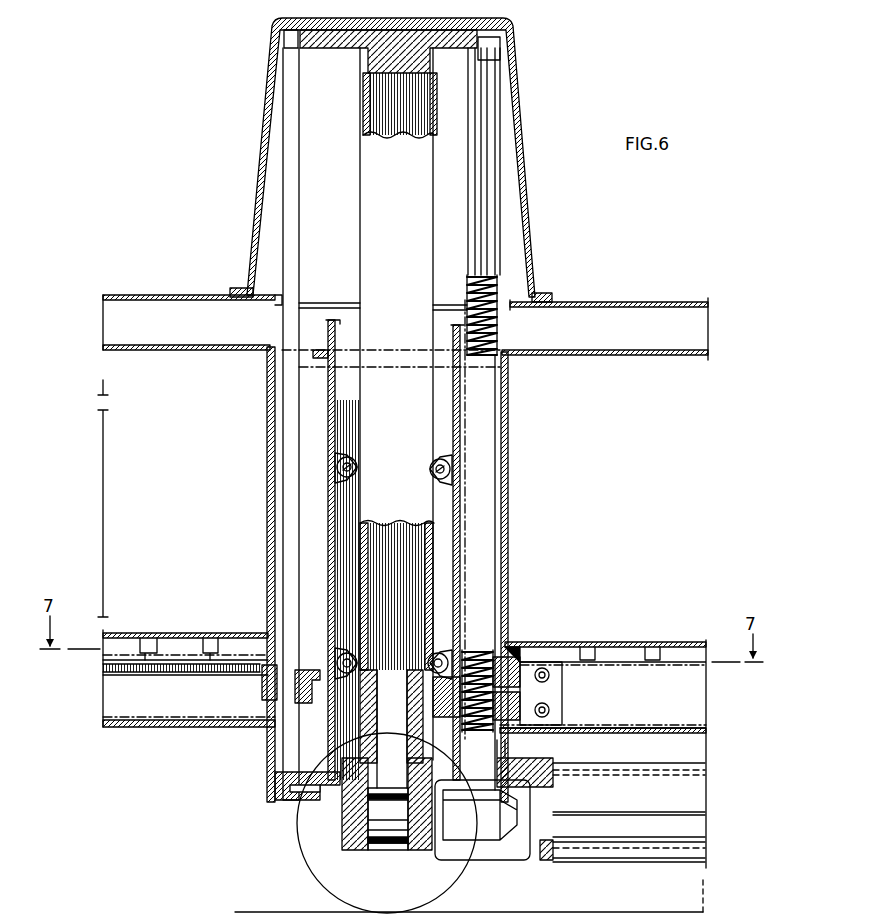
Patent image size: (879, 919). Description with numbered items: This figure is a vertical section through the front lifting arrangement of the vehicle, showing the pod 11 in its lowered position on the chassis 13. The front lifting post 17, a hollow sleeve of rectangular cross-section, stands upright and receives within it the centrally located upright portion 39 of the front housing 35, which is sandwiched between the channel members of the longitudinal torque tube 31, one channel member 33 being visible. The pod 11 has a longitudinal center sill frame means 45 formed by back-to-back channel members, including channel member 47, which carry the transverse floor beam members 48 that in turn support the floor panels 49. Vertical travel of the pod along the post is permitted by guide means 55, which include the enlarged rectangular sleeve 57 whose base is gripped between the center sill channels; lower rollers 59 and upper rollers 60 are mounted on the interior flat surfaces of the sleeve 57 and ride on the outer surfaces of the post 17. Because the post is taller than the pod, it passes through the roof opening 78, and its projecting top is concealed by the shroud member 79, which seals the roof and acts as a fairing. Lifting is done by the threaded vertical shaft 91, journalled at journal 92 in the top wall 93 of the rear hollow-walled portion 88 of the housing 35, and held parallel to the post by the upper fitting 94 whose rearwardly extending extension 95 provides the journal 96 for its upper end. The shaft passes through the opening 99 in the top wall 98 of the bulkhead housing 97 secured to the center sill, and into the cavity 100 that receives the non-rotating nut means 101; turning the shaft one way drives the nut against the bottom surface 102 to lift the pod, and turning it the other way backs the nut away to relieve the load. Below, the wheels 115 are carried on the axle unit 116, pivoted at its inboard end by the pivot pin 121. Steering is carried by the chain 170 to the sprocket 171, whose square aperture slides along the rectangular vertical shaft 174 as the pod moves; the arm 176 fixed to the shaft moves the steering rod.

The passenger or freight pod 11 is at (97, 449).
The chassis 13 is at (630, 866).
The front lifting post 17 is at (360, 206).
The longitudinal torque tube 31 is at (710, 803).
The channel member 33 is at (692, 788).
The front housing 35 is at (338, 823).
The upright portion 39 is at (353, 733).
The center sill frame means 45 is at (710, 716).
The channel member 47 is at (698, 692).
The transverse floor beam members 48 is at (165, 638).
The floor panels 49 is at (243, 642).
The guide means 55 is at (465, 527).
The rectangular sleeve 57 is at (328, 428).
The lower roller means 59 is at (432, 658).
The upper roller means 60 is at (430, 469).
The roof opening 78 is at (277, 306).
The shroud member 79 is at (262, 163).
The rear hollow-walled portion of housing 88 is at (487, 841).
The vertical shaft 91 is at (498, 333).
The journal 92 is at (517, 757).
The top wall 93 is at (540, 758).
The upper fitting 94 is at (373, 62).
The rearwardly extending extension 95 is at (458, 50).
The journal 96 is at (500, 47).
The bulkhead housing 97 is at (527, 656).
The top wall 98 is at (515, 657).
The opening 99 is at (480, 653).
The cavity 100 is at (520, 697).
The nut means 101 is at (502, 717).
The bottom surface 102 is at (545, 685).
The wheels 115 is at (332, 884).
The axle unit 116 is at (377, 850).
The pivot pin 121 is at (336, 833).
The chain 170 is at (188, 674).
The sprocket 171 is at (263, 676).
The vertical shaft 174 is at (282, 743).
The arm 176 is at (282, 770).